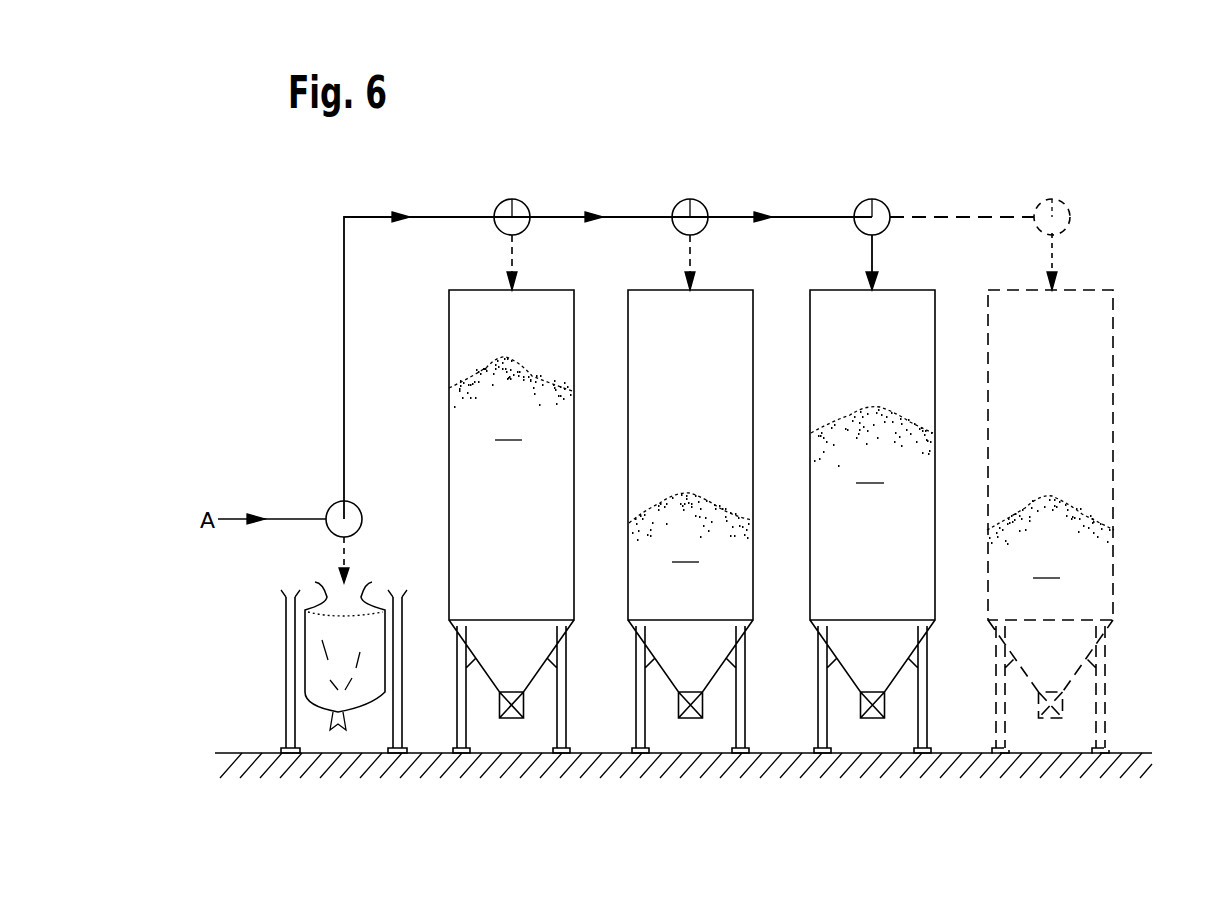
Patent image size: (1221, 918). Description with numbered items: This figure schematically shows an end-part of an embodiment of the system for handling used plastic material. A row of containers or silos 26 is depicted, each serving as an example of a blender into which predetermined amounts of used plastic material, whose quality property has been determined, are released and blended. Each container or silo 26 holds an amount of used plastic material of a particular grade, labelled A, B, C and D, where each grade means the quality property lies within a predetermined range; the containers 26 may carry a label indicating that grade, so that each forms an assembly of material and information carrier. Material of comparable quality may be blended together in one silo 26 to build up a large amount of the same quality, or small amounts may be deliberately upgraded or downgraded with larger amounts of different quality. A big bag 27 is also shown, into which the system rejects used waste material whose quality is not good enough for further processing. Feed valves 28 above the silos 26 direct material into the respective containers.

The container or silo 26 is at (449, 305).
The big bag 27 is at (305, 642).
The valve 28 is at (525, 207).